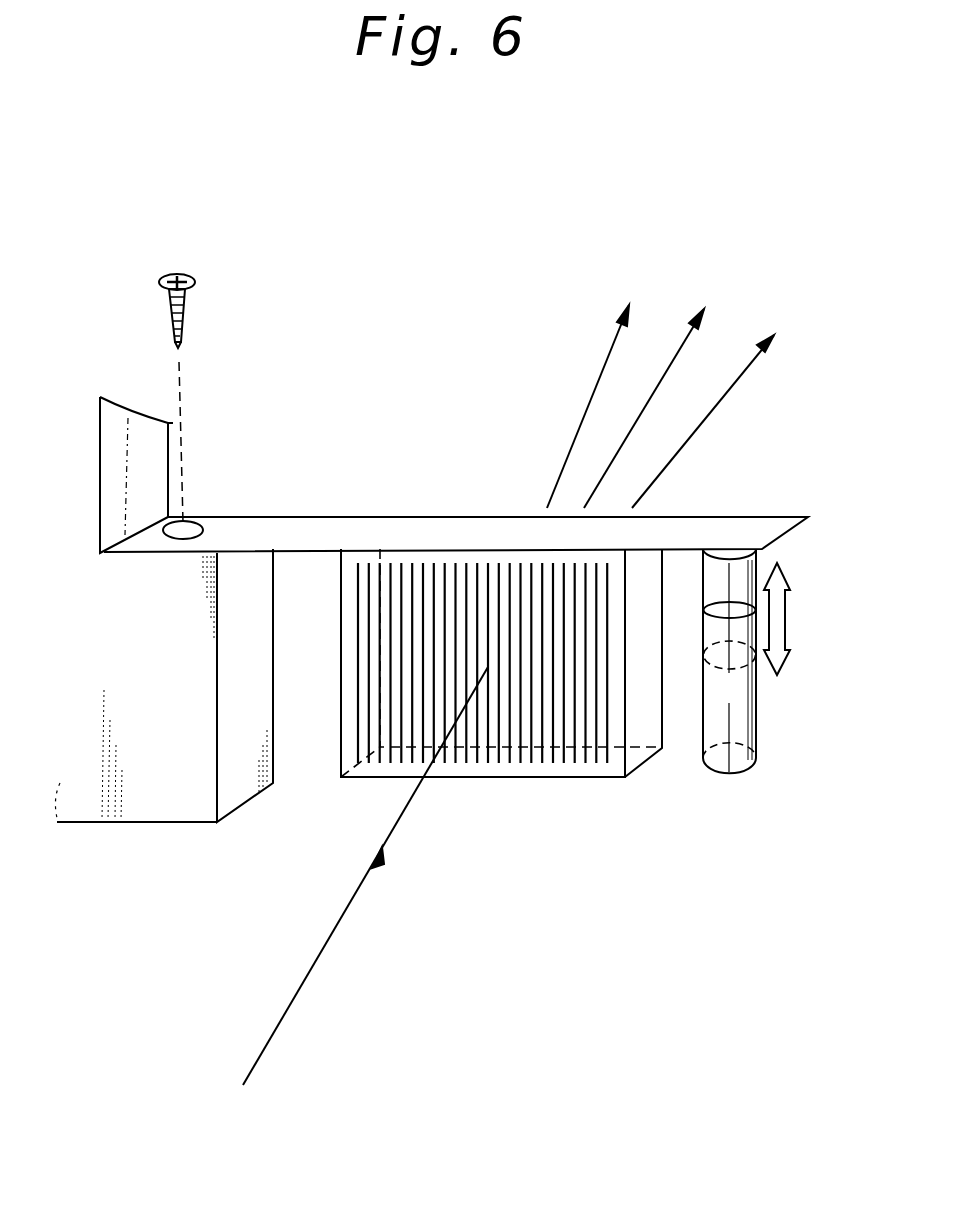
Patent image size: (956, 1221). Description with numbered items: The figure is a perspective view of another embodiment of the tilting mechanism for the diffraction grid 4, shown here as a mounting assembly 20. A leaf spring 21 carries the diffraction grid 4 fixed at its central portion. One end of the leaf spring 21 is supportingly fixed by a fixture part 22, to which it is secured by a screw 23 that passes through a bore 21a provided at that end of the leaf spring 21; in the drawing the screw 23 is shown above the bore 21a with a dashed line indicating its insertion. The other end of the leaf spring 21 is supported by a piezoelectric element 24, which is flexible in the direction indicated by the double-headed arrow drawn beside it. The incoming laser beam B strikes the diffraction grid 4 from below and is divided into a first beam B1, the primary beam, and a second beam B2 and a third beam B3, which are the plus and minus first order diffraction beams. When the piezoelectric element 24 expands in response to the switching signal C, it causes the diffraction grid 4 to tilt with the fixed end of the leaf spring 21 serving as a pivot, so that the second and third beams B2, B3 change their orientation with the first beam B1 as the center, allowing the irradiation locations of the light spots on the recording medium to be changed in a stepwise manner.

The holder 20 is at (218, 837).
The leaf spring 21 is at (320, 517).
The bore 21a is at (207, 518).
The fixture part 22 is at (158, 803).
The screw 23 is at (187, 312).
The diffraction grid 4 is at (583, 778).
The piezoelectric element 24 is at (760, 747).
The laser beam B is at (258, 1057).
The first beam B1 is at (655, 390).
The second beam B2 is at (577, 436).
The third beam B3 is at (667, 468).
The switching signal C is at (758, 719).